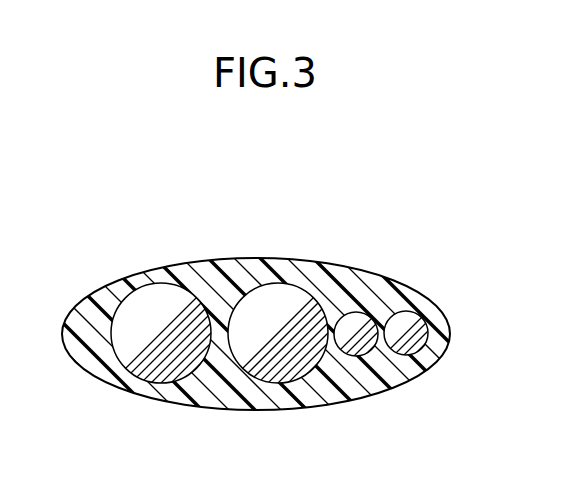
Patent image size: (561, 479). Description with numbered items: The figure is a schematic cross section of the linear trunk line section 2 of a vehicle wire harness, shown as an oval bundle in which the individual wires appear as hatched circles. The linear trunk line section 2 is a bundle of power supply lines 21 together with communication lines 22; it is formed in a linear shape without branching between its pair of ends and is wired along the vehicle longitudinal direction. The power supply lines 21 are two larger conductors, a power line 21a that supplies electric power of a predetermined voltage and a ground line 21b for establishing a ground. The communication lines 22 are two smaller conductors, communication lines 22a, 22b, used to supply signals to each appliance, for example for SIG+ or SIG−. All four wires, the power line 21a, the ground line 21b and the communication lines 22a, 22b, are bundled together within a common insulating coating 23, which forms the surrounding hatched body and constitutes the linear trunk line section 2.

The linear trunk line section 2 is at (407, 143).
The power supply line 21 is at (260, 179).
The power line 21a is at (193, 297).
The ground line 21b is at (270, 302).
The communication line 22 is at (435, 179).
The communication line 22a is at (365, 323).
The communication line 22b is at (415, 323).
The common insulating coating 23 is at (309, 268).